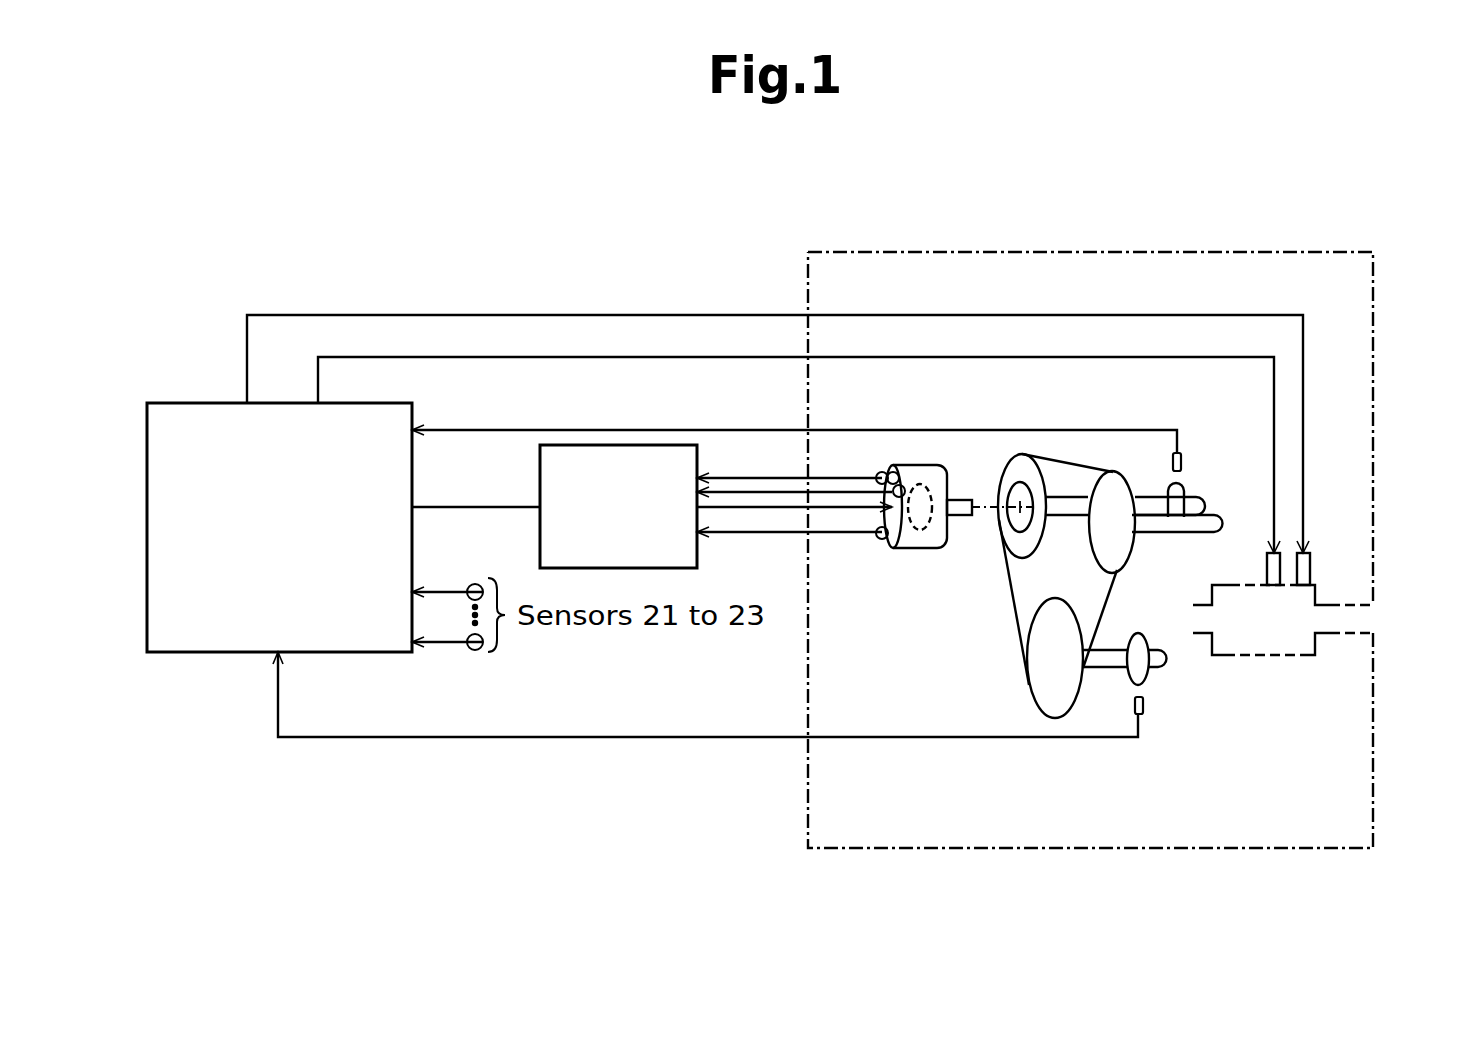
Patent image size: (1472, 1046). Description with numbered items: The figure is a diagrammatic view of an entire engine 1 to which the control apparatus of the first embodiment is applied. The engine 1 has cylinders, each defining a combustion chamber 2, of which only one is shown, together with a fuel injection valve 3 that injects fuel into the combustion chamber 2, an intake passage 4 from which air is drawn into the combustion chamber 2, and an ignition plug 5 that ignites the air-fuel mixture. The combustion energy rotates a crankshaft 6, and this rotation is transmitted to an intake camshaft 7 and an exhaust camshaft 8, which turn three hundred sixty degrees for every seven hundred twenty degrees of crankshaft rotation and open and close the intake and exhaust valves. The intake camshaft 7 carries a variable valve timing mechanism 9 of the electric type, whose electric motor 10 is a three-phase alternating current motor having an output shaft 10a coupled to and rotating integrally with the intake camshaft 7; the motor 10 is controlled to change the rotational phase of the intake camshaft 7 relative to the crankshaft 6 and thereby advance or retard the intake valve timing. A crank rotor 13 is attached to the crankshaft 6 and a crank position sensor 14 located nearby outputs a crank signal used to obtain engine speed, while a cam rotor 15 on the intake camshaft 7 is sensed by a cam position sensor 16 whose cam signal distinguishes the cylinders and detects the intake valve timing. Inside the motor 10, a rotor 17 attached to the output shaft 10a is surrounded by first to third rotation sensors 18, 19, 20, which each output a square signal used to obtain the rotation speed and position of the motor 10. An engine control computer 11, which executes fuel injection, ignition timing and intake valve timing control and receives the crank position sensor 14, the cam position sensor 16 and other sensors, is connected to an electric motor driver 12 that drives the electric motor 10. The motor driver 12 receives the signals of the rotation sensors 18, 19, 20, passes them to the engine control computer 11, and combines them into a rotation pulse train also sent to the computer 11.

The engine 1 is at (1295, 252).
The combustion chamber 2 is at (1259, 655).
The fuel injection valve 3 is at (1310, 560).
The intake passage 4 is at (1371, 622).
The ignition plug 5 is at (1267, 565).
The crankshaft 6 is at (1103, 668).
The intake camshaft 7 is at (1063, 516).
The exhaust camshaft 8 is at (1160, 533).
The variable valve timing mechanism 9 is at (1003, 530).
The electric motor 10 is at (948, 470).
The output shaft 10a is at (958, 518).
The engine control computer 11 is at (190, 403).
The electric motor driver 12 is at (697, 568).
The crank rotor 13 is at (1143, 635).
The crank position sensor 14 is at (1144, 708).
The cam rotor 15 is at (1184, 485).
The cam position sensor 16 is at (1181, 458).
The rotor 17 is at (904, 486).
The first rotation sensor 18 is at (893, 472).
The second rotation sensor 19 is at (878, 538).
The third rotation sensor 20 is at (877, 474).